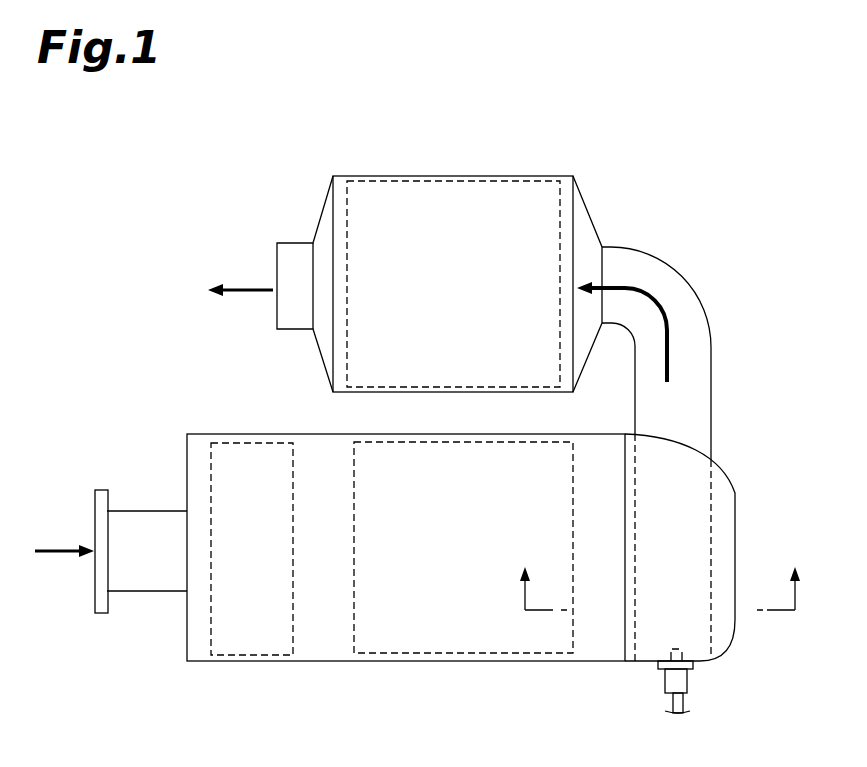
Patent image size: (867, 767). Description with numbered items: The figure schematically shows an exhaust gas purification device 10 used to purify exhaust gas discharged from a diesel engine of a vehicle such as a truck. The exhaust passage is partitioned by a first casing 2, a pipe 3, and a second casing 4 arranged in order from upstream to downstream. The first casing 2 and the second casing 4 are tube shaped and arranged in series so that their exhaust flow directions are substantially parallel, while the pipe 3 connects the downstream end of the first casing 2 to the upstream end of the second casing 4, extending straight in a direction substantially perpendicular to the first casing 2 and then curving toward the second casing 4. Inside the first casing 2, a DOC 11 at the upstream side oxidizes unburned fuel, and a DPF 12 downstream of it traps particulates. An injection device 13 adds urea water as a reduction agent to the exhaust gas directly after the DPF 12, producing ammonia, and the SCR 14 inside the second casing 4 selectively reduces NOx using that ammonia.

The exhaust gas purification device 10 is at (640, 125).
The second casing 4 is at (500, 168).
The SCR 14 is at (422, 198).
The pipe 3 is at (725, 402).
The first casing 2 is at (437, 676).
The DOC 11 is at (242, 452).
The DPF 12 is at (382, 643).
The injection device 13 is at (705, 690).